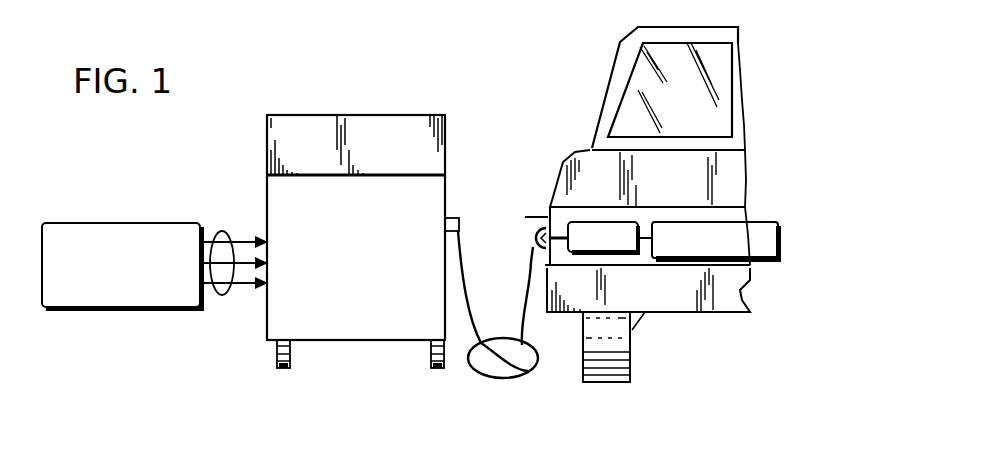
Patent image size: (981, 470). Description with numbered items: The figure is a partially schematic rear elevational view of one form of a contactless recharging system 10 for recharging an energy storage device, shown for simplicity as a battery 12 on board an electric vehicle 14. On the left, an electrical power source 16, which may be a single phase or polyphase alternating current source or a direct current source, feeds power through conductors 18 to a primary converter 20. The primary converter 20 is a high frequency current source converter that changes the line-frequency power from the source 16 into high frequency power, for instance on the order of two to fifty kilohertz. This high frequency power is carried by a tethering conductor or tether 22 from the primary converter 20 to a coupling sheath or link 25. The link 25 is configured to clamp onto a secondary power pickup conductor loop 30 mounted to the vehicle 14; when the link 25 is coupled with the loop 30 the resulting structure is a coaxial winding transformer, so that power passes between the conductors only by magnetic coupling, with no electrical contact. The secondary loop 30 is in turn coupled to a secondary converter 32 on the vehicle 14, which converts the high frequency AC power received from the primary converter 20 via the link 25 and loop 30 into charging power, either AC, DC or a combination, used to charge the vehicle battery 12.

The contactless recharging system 10 is at (466, 401).
The battery 12 is at (770, 247).
The electric vehicle 14 is at (770, 64).
The electrical power source 16 is at (67, 293).
The conductors 18 is at (222, 230).
The primary converter 20 is at (365, 322).
The tether 22 is at (525, 377).
The coupling link 25 is at (523, 243).
The secondary power pickup conductor loop 30 is at (553, 205).
The secondary converter 32 is at (618, 222).